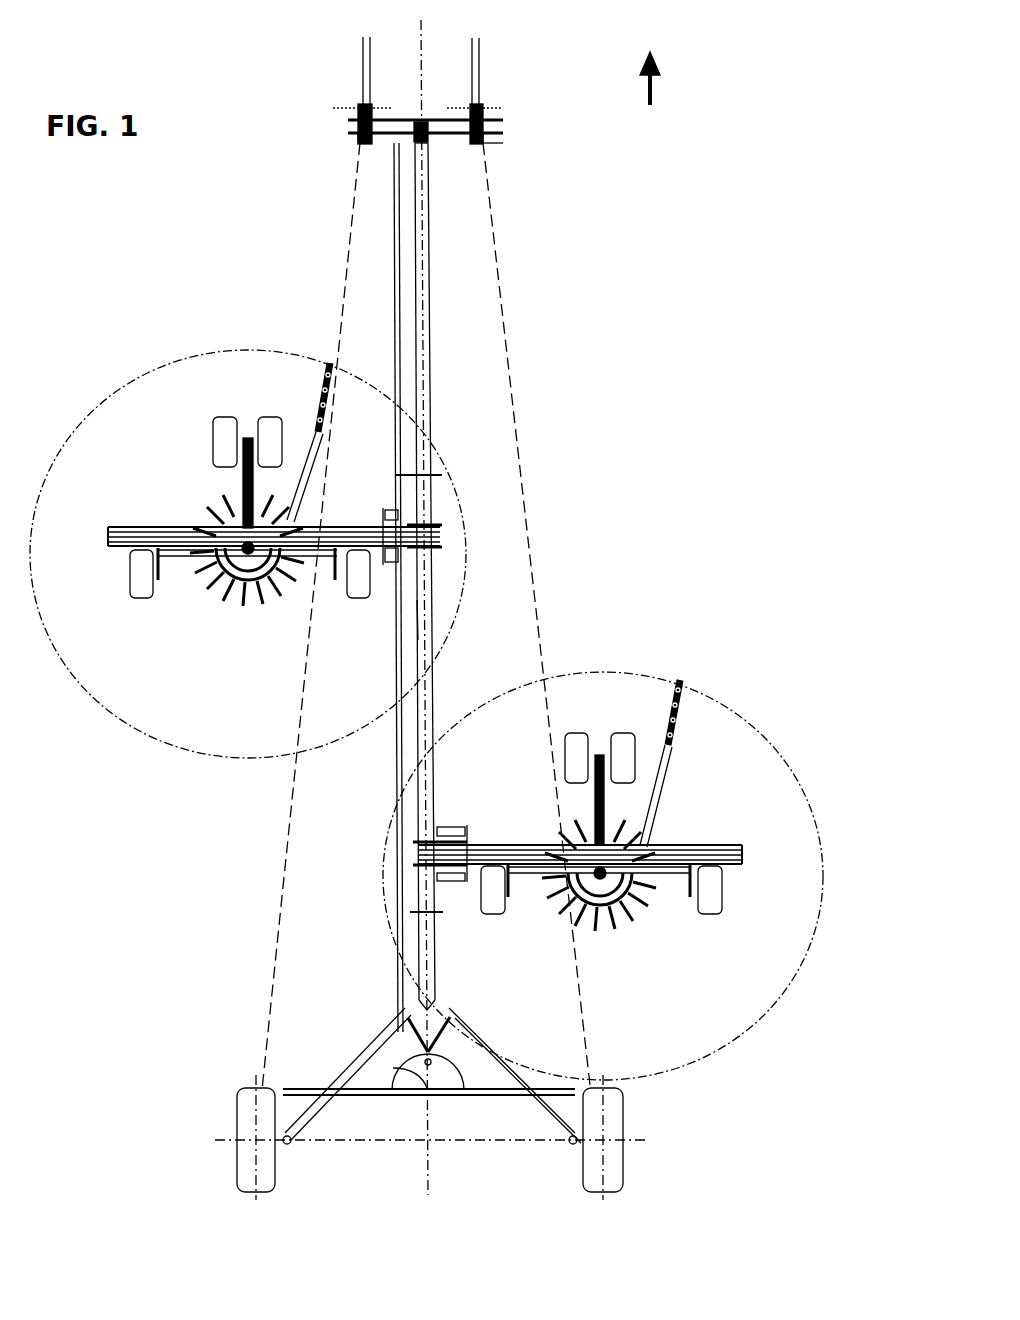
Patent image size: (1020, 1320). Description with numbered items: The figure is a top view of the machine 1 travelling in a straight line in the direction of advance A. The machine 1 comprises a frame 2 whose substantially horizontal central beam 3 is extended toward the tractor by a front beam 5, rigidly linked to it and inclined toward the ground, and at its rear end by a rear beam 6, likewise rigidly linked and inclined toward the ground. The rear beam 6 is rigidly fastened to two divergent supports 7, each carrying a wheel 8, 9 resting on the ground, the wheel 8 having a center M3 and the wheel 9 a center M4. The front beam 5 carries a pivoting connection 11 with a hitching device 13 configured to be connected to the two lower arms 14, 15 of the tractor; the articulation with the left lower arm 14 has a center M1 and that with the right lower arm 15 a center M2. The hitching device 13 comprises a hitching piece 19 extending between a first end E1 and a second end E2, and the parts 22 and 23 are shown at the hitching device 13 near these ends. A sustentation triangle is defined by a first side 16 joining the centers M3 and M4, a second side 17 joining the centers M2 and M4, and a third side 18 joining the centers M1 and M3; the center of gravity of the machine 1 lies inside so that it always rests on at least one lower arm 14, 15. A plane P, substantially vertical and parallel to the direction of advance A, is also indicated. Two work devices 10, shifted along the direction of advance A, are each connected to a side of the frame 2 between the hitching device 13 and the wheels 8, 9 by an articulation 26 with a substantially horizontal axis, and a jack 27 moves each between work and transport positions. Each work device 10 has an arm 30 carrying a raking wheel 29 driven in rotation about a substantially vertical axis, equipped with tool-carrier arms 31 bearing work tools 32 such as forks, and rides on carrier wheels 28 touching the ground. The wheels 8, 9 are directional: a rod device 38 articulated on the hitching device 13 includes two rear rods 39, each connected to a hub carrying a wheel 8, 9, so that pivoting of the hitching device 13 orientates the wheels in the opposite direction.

The machine 1 is at (740, 1040).
The frame 2 is at (434, 320).
The central beam 3 is at (436, 628).
The front beam 5 is at (432, 263).
The rear beam 6 is at (430, 985).
The divergent supports 7 is at (333, 1103).
The wheel 8 is at (243, 1105).
The wheel 9 is at (617, 1105).
The work device 10 is at (110, 520).
The pivoting connection 11 is at (446, 142).
The hitching device 13 is at (494, 144).
The lower arm 14 is at (363, 45).
The lower arm 15 is at (480, 47).
The first side 16 is at (483, 1141).
The second side 17 is at (511, 390).
The third side 18 is at (344, 305).
The hitching piece 19 is at (404, 128).
The left clamp joint 22 is at (360, 132).
The right clamp joint 23 is at (480, 112).
The articulation 26 is at (392, 560).
The jack 27 is at (368, 535).
The carrier wheel 28 is at (270, 427).
The raking wheel 29 is at (236, 620).
The arm 30 is at (341, 527).
The tool-carrier arms 31 is at (307, 473).
The work tools 32 is at (318, 372).
The rod device 38 is at (394, 228).
The rear rods 39 is at (373, 1102).
The center M1 is at (362, 110).
The center M2 is at (480, 108).
The center M3 is at (283, 1140).
The center M4 is at (578, 1140).
The first end E1 is at (362, 135).
The second end E2 is at (487, 136).
The plane P is at (427, 1150).
The direction of advance A is at (663, 78).